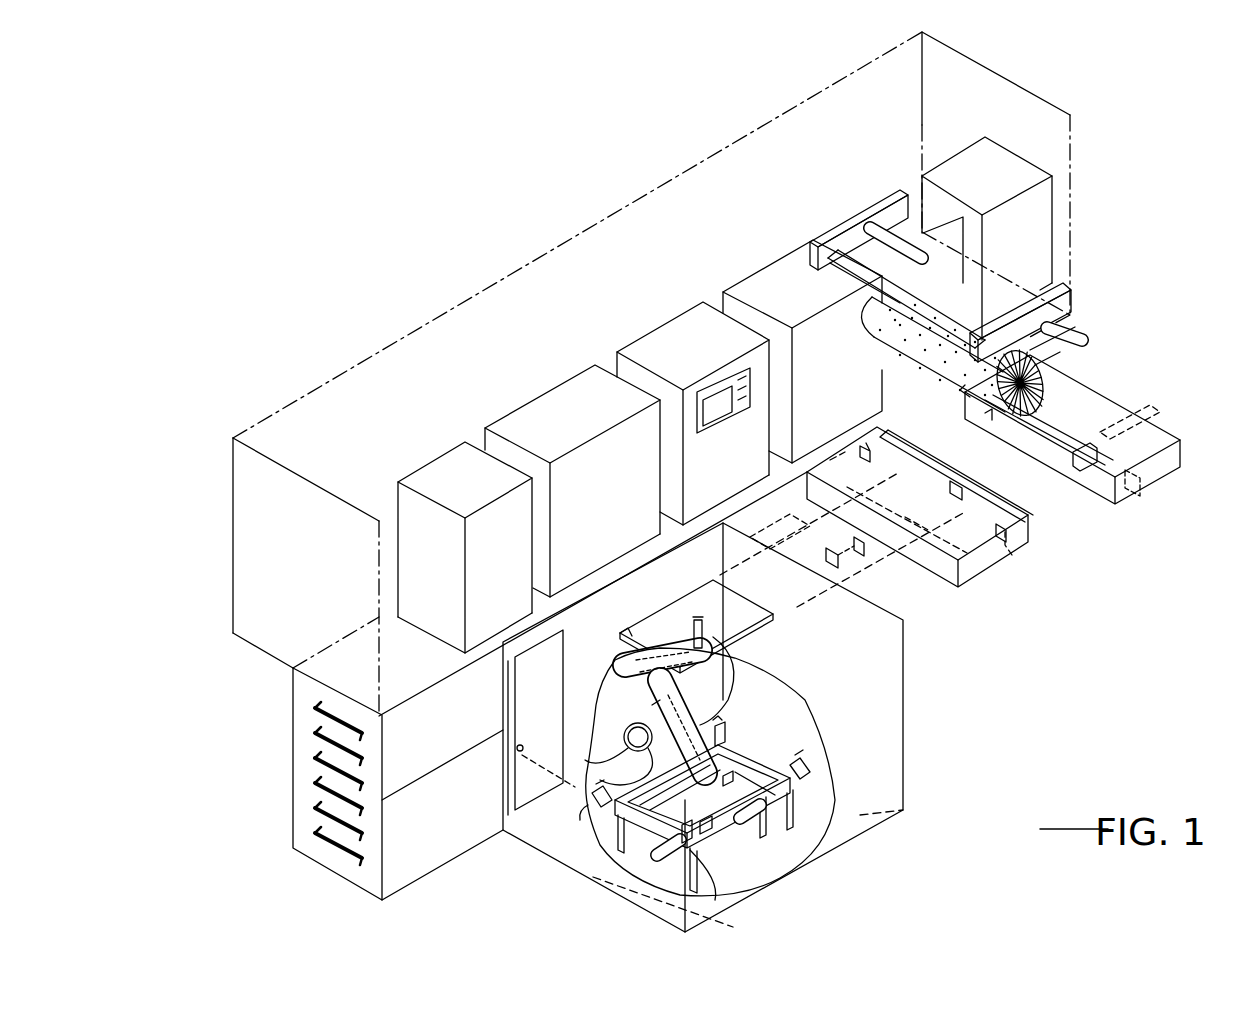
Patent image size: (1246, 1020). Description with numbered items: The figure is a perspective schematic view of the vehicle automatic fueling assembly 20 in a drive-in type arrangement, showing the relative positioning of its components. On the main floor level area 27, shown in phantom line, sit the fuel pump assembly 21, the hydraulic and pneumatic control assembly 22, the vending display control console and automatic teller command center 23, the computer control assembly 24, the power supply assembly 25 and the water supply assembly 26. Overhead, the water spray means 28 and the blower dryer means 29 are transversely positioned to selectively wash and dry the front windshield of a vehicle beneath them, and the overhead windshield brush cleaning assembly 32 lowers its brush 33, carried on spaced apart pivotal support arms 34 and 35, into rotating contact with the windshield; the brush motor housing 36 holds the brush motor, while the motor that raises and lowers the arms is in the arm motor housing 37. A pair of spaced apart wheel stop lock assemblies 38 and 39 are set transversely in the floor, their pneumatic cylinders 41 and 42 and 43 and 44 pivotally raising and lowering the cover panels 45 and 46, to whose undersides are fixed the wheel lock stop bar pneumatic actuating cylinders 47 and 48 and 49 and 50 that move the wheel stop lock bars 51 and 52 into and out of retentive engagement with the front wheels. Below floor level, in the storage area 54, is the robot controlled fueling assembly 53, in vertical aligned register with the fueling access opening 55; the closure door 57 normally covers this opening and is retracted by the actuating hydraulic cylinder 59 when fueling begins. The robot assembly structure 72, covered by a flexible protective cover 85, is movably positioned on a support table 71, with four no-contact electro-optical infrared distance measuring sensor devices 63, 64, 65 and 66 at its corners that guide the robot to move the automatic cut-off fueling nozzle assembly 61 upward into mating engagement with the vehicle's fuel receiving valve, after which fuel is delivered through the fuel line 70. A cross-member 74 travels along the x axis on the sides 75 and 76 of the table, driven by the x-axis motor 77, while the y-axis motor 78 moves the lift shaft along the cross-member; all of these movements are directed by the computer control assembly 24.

The vehicle automatic fueling assembly 20 is at (1176, 286).
The fuel pump assembly 21 is at (440, 452).
The hydraulic and pneumatic control assembly 22 is at (525, 403).
The vending display control console and automatic teller command center 23 is at (646, 338).
The computer control assembly 24 is at (757, 277).
The power supply assembly 25 is at (918, 215).
The water supply assembly 26 is at (953, 165).
The main floor level area 27 is at (233, 568).
The overhead water spray means 28 is at (872, 305).
The blower dryer means 29 is at (866, 283).
The overhead windshield brush cleaning assembly 32 is at (1118, 351).
The brush 33 is at (1058, 392).
The pivotal support arm 34 is at (1076, 333).
The pivotal support arm 35 is at (887, 232).
The brush motor housing 36 is at (826, 235).
The arm motor housing 37 is at (1062, 300).
The wheel stop lock assembly 38 is at (1010, 601).
The wheel stop lock assembly 39 is at (1158, 514).
The pneumatic cylinder 41 is at (1015, 560).
The pneumatic cylinder 42 is at (878, 484).
The pneumatic cylinder 43 is at (1132, 497).
The pneumatic cylinder 44 is at (985, 412).
The wheel stop lock assembly cover panel 45 is at (1025, 512).
The wheel stop lock assembly cover panel 46 is at (1148, 468).
The wheel lock stop bar pneumatic actuating cylinder 47 is at (932, 550).
The wheel lock stop bar pneumatic actuating cylinder 48 is at (845, 470).
The wheel lock stop bar pneumatic actuating cylinder 49 is at (1135, 432).
The wheel lock stop bar pneumatic actuating cylinder 50 is at (963, 394).
The wheel stop lock bar 51 is at (968, 460).
The wheel stop lock bar 52 is at (1063, 452).
The robot controlled fueling assembly 53 is at (814, 701).
The storage area 54 is at (912, 714).
The fueling access opening 55 is at (672, 610).
The fueling access opening closure door 57 is at (805, 610).
The actuating hydraulic cylinder 59 is at (912, 522).
The automatic cut-off fueling nozzle assembly 61 is at (695, 640).
The electro-optical infrared distance measuring sensor device 63 is at (808, 764).
The electro-optical infrared distance measuring sensor device 64 is at (728, 745).
The electro-optical infrared distance measuring sensor device 65 is at (582, 795).
The electro-optical infrared distance measuring sensor device 66 is at (718, 865).
The fuel line 70 is at (722, 670).
The support table 71 is at (812, 800).
The robot assembly structure 72 is at (742, 688).
The cross-member 74 is at (724, 782).
The side of support table 75 is at (704, 820).
The side of support table 76 is at (625, 755).
The x-axis motor 77 is at (655, 855).
The y-axis motor 78 is at (765, 838).
The flexible protective cover 85 is at (655, 698).